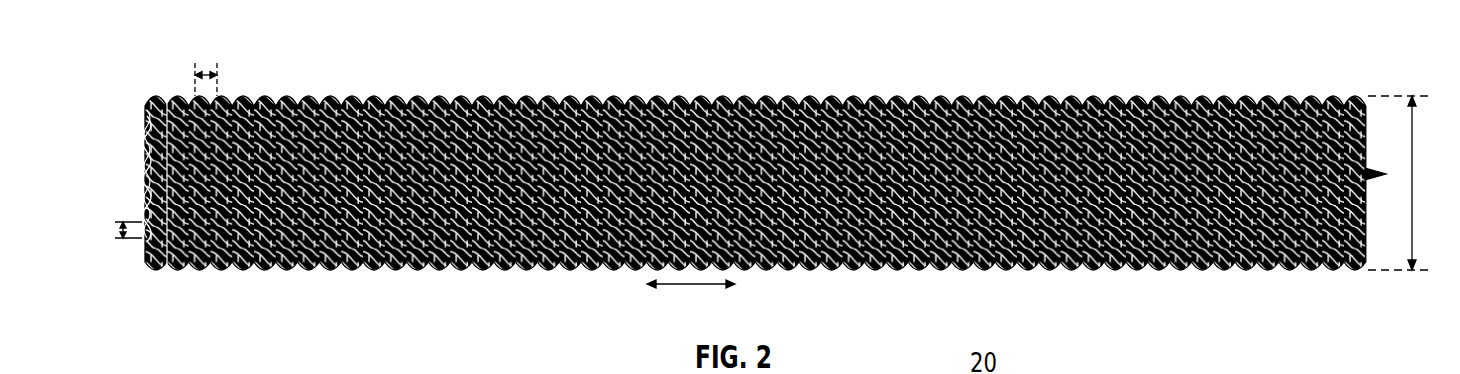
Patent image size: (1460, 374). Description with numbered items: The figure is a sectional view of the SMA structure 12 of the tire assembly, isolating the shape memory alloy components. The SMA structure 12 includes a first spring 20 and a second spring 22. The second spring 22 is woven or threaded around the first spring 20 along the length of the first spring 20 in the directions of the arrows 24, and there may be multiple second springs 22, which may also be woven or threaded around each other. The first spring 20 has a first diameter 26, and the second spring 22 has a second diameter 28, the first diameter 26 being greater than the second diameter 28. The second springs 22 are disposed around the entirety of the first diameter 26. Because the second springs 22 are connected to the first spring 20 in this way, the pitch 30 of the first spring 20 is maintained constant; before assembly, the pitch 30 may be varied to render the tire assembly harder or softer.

The SMA structure 12 is at (1019, 70).
The first spring 20 is at (167, 98).
The second spring 22 is at (152, 98).
The arrows 24 is at (700, 284).
The first diameter 26 is at (1412, 173).
The second diameter 28 is at (120, 229).
The pitch 30 is at (209, 66).